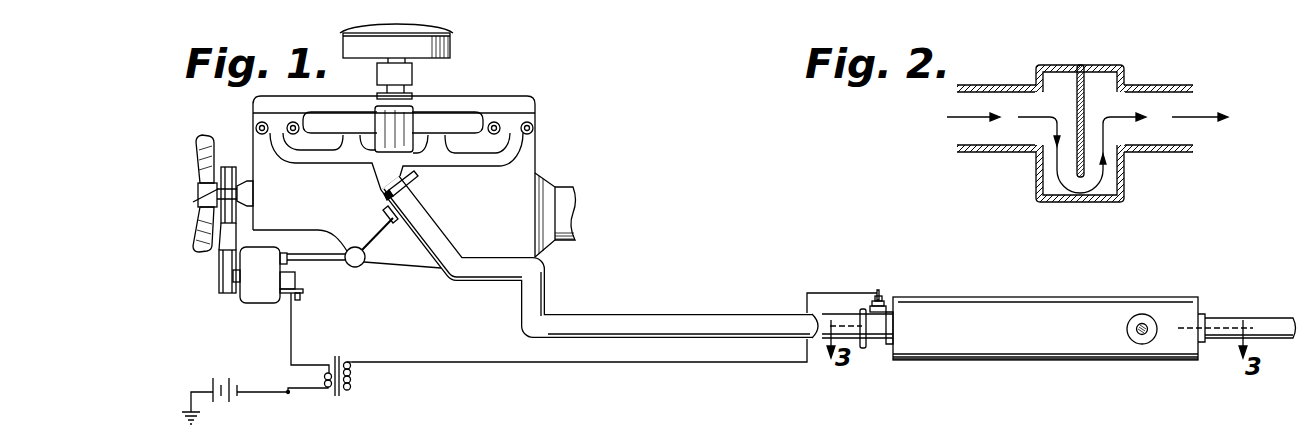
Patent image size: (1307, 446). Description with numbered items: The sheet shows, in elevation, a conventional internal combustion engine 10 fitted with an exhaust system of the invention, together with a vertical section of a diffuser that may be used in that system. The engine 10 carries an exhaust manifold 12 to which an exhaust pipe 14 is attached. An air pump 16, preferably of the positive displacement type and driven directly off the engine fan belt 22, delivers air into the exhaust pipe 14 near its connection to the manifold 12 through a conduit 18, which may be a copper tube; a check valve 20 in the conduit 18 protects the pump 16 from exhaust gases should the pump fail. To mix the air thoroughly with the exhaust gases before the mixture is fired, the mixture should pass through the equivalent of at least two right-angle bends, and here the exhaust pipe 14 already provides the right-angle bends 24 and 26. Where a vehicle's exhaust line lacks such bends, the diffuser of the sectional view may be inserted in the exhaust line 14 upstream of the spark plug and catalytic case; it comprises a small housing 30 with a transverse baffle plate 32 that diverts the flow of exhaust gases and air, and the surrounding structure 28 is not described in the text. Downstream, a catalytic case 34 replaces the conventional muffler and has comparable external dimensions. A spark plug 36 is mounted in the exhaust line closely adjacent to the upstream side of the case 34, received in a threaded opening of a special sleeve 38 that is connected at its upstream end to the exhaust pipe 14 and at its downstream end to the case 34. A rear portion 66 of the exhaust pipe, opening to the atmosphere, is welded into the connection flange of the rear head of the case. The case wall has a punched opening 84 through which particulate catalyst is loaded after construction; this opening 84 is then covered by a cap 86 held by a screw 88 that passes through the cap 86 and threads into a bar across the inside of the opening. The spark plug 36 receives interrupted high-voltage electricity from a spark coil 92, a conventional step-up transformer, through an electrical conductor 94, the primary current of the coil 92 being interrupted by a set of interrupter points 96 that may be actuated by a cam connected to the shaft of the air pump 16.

In FIG. 1, the internal combustion engine 10 is at (535, 168).
In FIG. 1, the exhaust manifold 12 is at (399, 178).
In FIG. 1, the exhaust pipe 14 is at (445, 246).
In FIG. 2, the exhaust pipe 14 is at (970, 151).
In FIG. 1, the air pump 16 is at (244, 297).
In FIG. 1, the conduit 18 is at (330, 263).
In FIG. 1, the check valve 20 is at (362, 267).
In FIG. 1, the fan belt 22 is at (226, 245).
In FIG. 1, the right-angle bend 24 is at (545, 270).
In FIG. 1, the right-angle bend 26 is at (522, 332).
In FIG. 2, the trap housing 28 is at (1026, 160).
In FIG. 2, the housing 30 is at (1122, 183).
In FIG. 2, the transverse baffle plate 32 is at (1084, 98).
In FIG. 1, the catalytic case 34 is at (974, 356).
In FIG. 1, the spark plug 36 is at (882, 300).
In FIG. 1, the sleeve 38 is at (877, 349).
In FIG. 1, the rear portion of the exhaust pipe 66 is at (1262, 322).
In FIG. 1, the opening 84 is at (1158, 316).
In FIG. 1, the cap 86 is at (1132, 316).
In FIG. 1, the screw 88 is at (1143, 345).
In FIG. 1, the spark coil 92 is at (352, 390).
In FIG. 1, the electrical conductor 94 is at (633, 364).
In FIG. 1, the interrupter points 96 is at (300, 302).